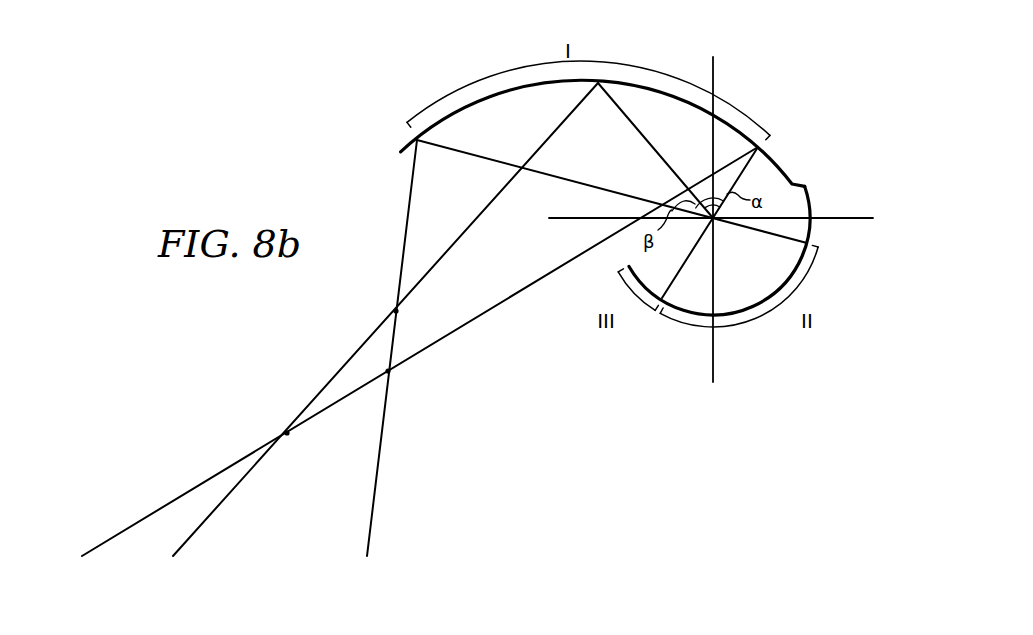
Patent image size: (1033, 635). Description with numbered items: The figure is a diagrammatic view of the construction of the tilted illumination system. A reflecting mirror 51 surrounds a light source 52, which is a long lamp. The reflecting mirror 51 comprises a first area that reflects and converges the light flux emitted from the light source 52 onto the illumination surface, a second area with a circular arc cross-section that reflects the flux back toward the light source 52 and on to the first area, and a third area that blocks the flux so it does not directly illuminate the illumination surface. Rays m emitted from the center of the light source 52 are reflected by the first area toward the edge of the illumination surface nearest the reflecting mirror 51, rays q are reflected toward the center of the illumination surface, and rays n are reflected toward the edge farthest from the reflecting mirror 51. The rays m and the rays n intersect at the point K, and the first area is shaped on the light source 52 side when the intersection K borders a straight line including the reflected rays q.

The reflecting mirror 51 is at (656, 86).
The light source 52 is at (724, 226).
The rays m is at (381, 474).
The rays n is at (172, 499).
The rays q is at (241, 487).
The intersection point K is at (390, 372).